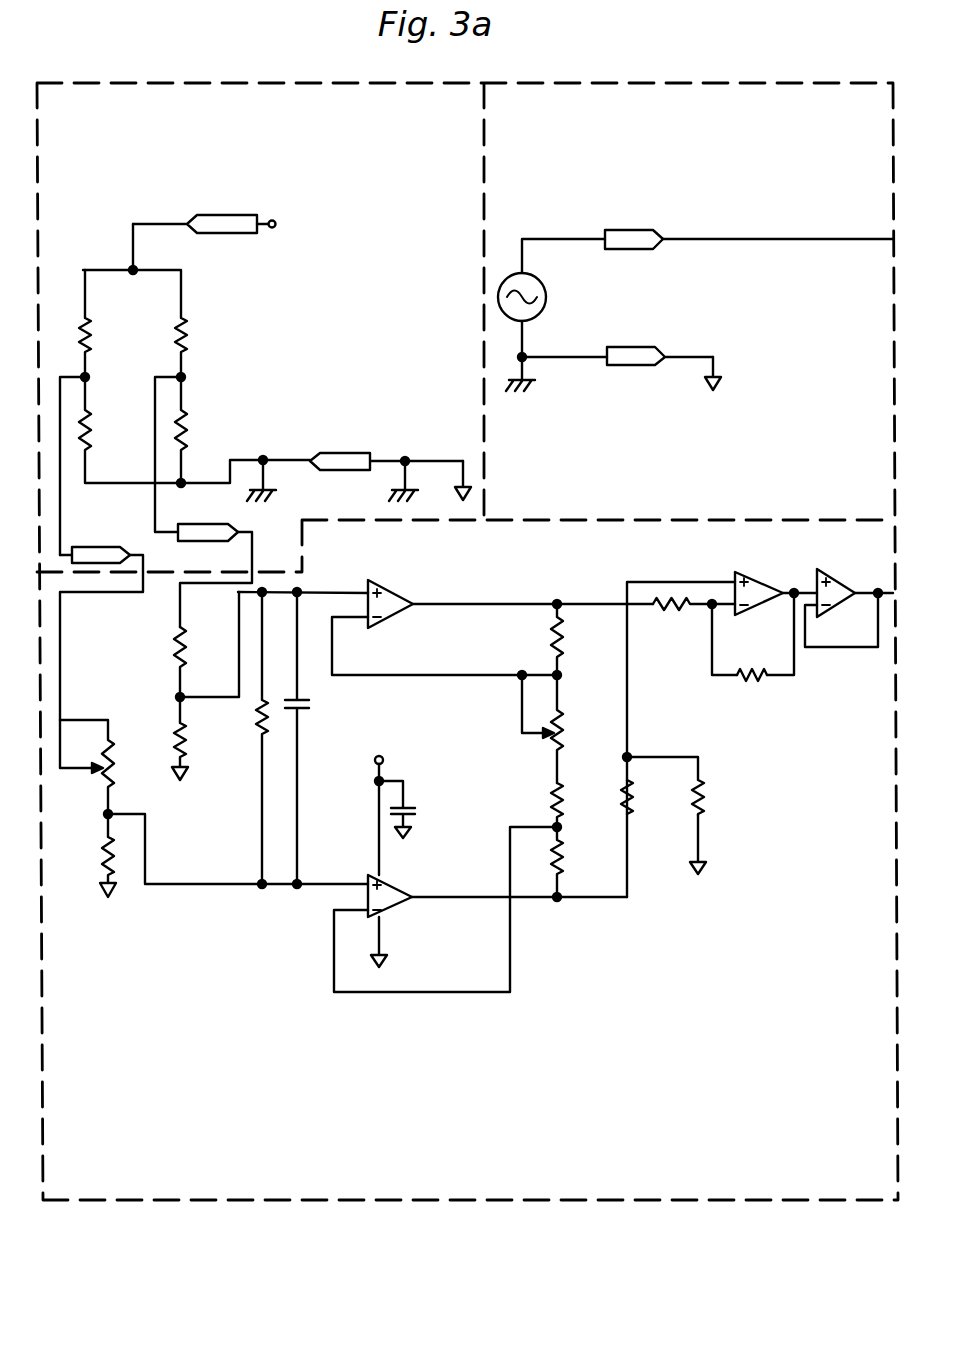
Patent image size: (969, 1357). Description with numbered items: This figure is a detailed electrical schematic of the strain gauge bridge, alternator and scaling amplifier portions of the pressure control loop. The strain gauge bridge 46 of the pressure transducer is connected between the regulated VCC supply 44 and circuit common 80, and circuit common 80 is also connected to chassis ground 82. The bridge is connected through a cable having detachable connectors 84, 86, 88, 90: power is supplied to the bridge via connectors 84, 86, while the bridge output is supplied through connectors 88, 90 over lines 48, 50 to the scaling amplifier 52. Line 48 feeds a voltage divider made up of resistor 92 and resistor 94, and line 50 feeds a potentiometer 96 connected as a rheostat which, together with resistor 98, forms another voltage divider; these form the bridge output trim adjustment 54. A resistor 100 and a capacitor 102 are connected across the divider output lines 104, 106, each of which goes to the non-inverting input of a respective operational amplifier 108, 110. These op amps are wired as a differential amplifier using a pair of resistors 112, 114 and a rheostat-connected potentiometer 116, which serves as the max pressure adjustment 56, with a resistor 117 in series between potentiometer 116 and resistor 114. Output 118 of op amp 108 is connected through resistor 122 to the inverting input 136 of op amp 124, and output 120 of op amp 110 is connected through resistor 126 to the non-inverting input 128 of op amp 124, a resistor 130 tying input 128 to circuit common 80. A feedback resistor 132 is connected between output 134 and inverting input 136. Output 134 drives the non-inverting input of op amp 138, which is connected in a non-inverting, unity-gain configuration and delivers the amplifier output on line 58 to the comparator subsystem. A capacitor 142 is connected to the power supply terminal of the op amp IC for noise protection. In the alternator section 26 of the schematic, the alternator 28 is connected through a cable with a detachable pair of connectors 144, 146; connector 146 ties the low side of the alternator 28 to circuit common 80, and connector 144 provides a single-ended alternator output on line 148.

The strain gauge bridge 46 is at (274, 166).
The detachable connector 84 is at (214, 234).
The regulated VCC supply 44 is at (269, 231).
The alternator 26 is at (568, 238).
The detachable connector 144 is at (634, 226).
The alternator output line 148 is at (810, 238).
The alternator 28 is at (546, 312).
The circuit common 80 is at (458, 490).
The detachable connector 146 is at (626, 366).
The detachable connector 86 is at (345, 452).
The chassis ground 82 is at (392, 496).
The detachable connector 90 is at (105, 546).
The bridge output line 50 is at (148, 562).
The detachable connector 88 is at (206, 524).
The bridge output line 48 is at (254, 561).
The scaling amplifier 52 is at (577, 1180).
The resistor 92 is at (174, 643).
The resistor 94 is at (174, 721).
The divider output line 104 is at (232, 693).
The resistor 100 is at (260, 716).
The capacitor 102 is at (309, 707).
The potentiometer 96 is at (120, 780).
The resistor 98 is at (102, 844).
The bridge output trim adjustment 54 is at (76, 848).
The divider output line 106 is at (232, 876).
The operational amplifier 108 is at (398, 585).
The op amp output 118 is at (506, 601).
The resistor 112 is at (548, 638).
The potentiometer 116 is at (568, 737).
The max pressure adjustment 56 is at (500, 742).
The resistor 117 is at (563, 810).
The resistor 114 is at (562, 870).
The operational amplifier 110 is at (404, 885).
The capacitor 142 is at (420, 814).
The op amp output 120 is at (434, 902).
The non-inverting input 128 is at (664, 584).
The resistor 126 is at (636, 799).
The resistor 130 is at (706, 799).
The resistor 122 is at (654, 612).
The operational amplifier 124 is at (755, 580).
The inverting input 136 is at (720, 678).
The resistor 132 is at (764, 680).
The op amp output 134 is at (810, 580).
The operational amplifier 138 is at (884, 590).
The scaling amplifier output 58 is at (876, 606).